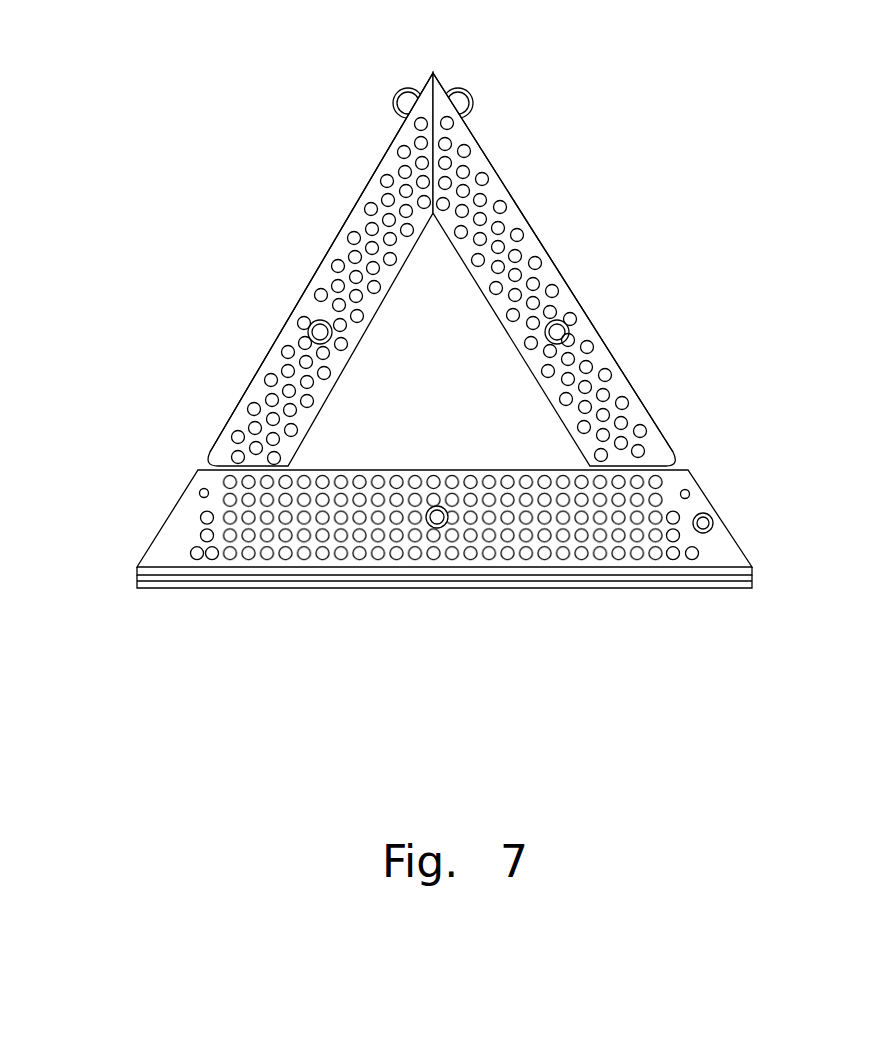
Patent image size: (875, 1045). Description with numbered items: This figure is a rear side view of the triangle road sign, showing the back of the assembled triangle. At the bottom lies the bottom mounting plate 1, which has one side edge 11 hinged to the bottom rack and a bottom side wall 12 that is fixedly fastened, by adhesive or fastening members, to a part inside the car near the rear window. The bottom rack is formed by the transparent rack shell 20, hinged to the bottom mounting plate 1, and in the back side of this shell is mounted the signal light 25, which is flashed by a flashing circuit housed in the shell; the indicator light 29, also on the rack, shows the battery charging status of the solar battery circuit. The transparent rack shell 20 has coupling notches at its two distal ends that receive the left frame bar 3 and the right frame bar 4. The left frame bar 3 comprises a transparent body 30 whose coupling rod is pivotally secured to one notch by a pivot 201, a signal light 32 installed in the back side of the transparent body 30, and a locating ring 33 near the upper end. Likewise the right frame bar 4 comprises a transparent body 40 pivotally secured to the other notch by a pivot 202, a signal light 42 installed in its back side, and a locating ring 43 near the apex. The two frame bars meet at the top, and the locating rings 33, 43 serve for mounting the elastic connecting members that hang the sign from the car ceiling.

The bottom mounting plate 1 is at (450, 388).
The left frame bar 3 is at (305, 268).
The right frame bar 4 is at (601, 253).
The side edge 11 is at (490, 569).
The bottom side wall 12 is at (539, 588).
The transparent rack shell 20 is at (450, 520).
The signal light 25 is at (432, 527).
The indicator light 29 is at (712, 521).
The transparent body 30 is at (315, 272).
The signal light 32 is at (309, 332).
The locating ring 33 is at (395, 98).
The transparent body 40 is at (580, 301).
The signal light 42 is at (569, 331).
The locating ring 43 is at (472, 99).
The pivot 201 is at (200, 491).
The pivot 202 is at (688, 491).